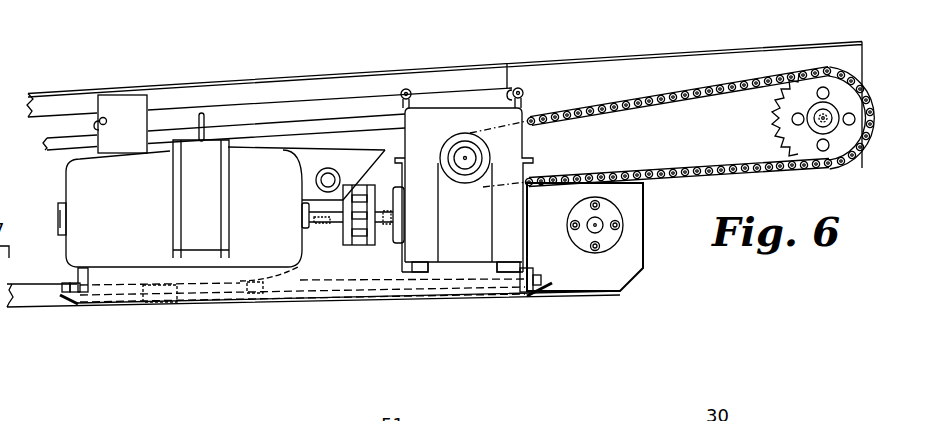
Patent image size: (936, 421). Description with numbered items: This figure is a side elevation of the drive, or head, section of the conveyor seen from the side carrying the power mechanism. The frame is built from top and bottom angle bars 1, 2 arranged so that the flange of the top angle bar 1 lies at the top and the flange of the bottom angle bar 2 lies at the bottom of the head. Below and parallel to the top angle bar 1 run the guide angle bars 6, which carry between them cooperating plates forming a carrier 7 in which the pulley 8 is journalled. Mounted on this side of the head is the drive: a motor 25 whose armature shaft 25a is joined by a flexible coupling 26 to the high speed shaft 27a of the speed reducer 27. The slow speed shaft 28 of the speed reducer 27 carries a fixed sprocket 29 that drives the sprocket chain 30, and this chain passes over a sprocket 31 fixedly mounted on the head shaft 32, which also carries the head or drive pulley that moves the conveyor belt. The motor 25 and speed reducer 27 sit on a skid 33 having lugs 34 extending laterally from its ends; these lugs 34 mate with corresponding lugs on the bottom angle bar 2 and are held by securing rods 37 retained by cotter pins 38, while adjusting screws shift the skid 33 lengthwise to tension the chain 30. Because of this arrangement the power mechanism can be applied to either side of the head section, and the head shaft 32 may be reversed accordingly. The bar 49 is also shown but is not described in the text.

The top angle bar 1 is at (62, 100).
The bottom angle bar 2 is at (42, 296).
The guide angle bar 6 is at (258, 143).
The carrier 7 is at (343, 163).
The pulley 8 is at (47, 130).
The motor 25 is at (221, 197).
The armature shaft 25a is at (321, 227).
The flexible coupling 26 is at (360, 245).
The speed reducer 27 is at (428, 120).
The high speed shaft 27a is at (390, 224).
The slow speed shaft 28 is at (465, 162).
The sprocket 29 is at (470, 140).
The sprocket chain 30 is at (680, 187).
The sprocket 31 is at (845, 98).
The head shaft 32 is at (840, 128).
The skid 33 is at (465, 293).
The lug 34 is at (88, 272).
The securing rod 37 is at (117, 298).
The cotter pin 38 is at (77, 288).
The cross bar 49 is at (288, 128).